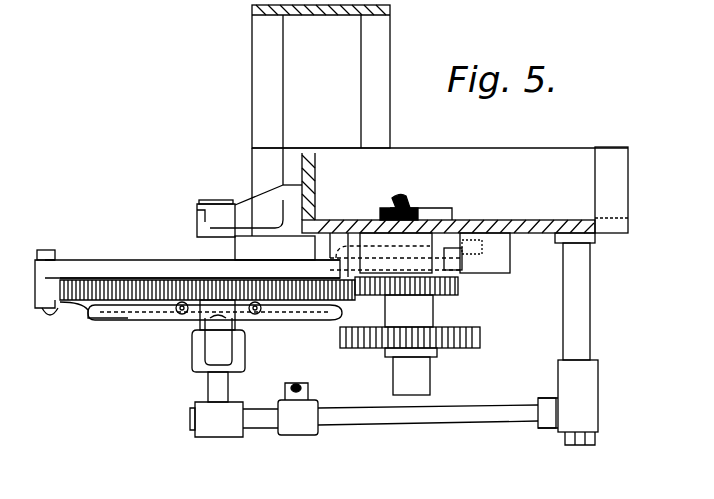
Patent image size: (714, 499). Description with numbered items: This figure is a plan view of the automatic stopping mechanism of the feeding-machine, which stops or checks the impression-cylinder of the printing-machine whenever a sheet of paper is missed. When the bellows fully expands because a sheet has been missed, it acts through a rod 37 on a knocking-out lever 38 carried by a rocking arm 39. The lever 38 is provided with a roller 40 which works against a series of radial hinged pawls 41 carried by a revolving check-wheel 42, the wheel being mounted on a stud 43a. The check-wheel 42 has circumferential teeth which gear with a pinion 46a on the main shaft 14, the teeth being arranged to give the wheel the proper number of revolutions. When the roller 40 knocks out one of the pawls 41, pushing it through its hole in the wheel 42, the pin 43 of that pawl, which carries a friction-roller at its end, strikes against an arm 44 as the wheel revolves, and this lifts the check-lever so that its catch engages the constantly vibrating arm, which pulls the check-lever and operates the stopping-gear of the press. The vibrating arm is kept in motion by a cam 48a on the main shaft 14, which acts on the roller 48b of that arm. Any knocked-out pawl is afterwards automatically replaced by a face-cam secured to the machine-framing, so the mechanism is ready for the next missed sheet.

The main shaft 14 is at (413, 382).
The rod 37 is at (300, 388).
The knocking-out lever 38 is at (216, 388).
The rocking arm 39 is at (403, 414).
The roller 40 is at (213, 342).
The radial hinged pawls 41 is at (136, 318).
The check-wheel 42 is at (120, 290).
The pin 43 is at (95, 306).
The stud 43a is at (210, 260).
The arm 44 is at (167, 270).
The pinion 46a is at (458, 287).
The cam 48a is at (430, 252).
The roller 48b is at (512, 238).